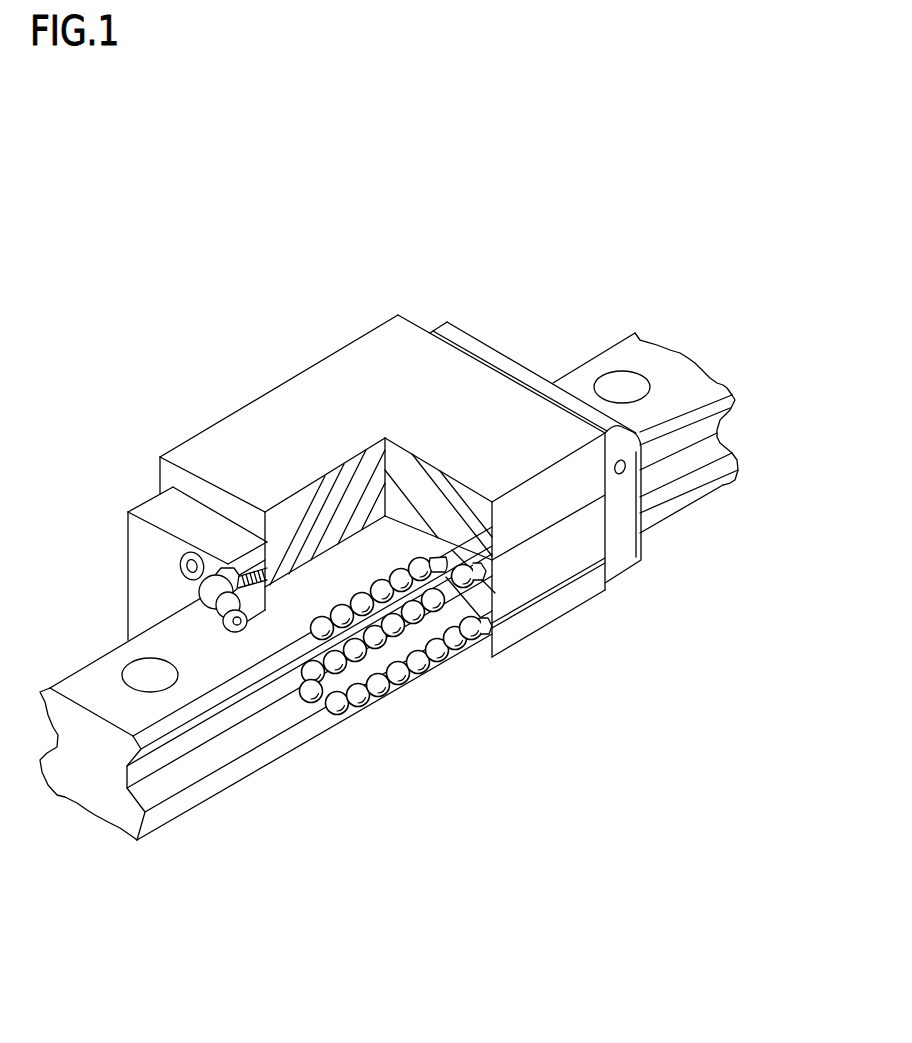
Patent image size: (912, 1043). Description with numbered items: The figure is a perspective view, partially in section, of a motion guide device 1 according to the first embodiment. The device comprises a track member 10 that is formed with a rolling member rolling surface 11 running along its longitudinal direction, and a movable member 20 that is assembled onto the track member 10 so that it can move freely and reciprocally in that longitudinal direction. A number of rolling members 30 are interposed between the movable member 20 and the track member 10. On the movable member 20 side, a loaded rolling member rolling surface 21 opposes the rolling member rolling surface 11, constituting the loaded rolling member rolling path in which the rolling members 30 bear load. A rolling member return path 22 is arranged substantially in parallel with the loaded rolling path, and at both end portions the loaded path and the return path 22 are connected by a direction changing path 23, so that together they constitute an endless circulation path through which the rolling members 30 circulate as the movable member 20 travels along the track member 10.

The motion guide device 1 is at (410, 503).
The track member 10 is at (410, 586).
The rolling member rolling surface 11 is at (222, 748).
The movable member 20 is at (585, 582).
The loaded rolling member rolling surface 21 is at (443, 610).
The rolling member return path 22 is at (495, 595).
The direction changing path 23 is at (302, 706).
The rolling members 30 is at (363, 700).